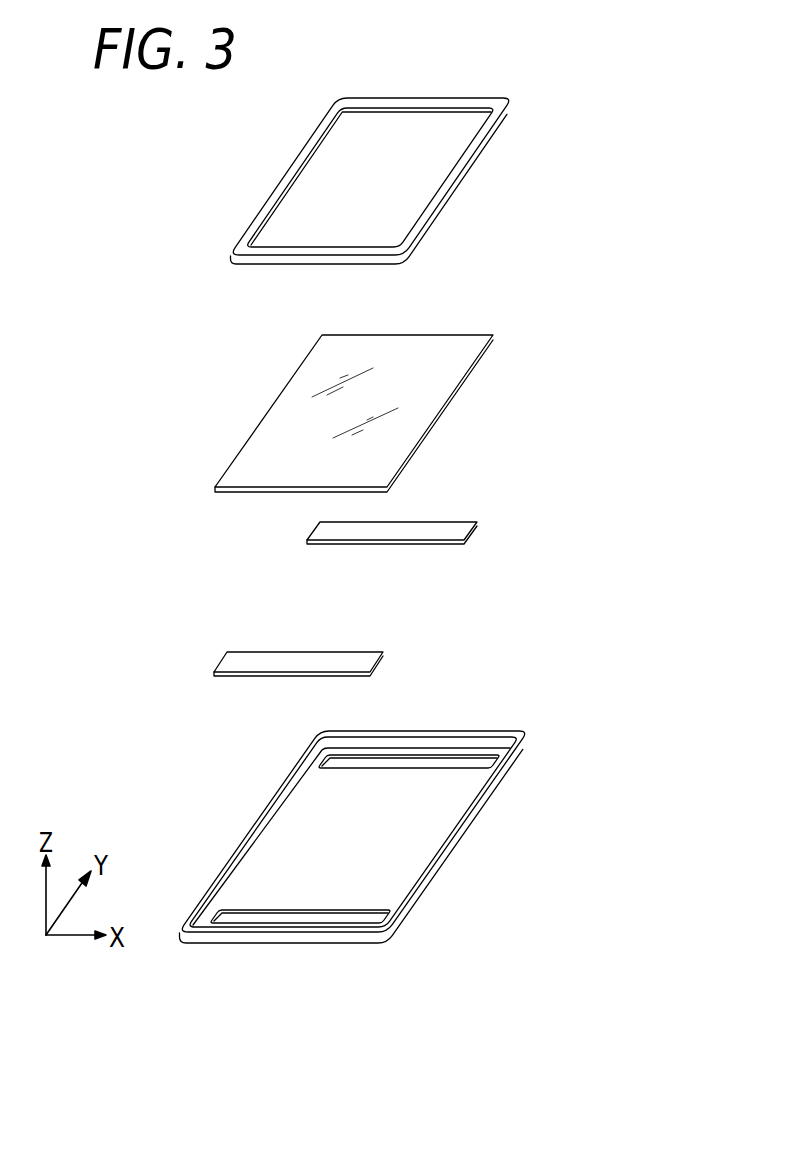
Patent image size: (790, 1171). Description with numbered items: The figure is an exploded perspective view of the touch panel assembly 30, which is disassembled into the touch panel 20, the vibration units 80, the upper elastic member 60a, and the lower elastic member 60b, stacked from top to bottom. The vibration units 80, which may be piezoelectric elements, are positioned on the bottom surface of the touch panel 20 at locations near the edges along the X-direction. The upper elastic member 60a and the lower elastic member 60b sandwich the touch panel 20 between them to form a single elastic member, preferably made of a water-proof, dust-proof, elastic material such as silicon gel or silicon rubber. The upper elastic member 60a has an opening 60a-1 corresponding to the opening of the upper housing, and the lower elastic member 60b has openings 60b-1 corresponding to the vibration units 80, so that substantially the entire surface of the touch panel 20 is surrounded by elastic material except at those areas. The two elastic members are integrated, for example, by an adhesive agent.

The touch panel assembly 30 is at (628, 960).
The upper elastic member 60a is at (422, 181).
The opening 60a-1 is at (395, 188).
The touch panel 20 is at (420, 395).
The vibration unit 80 is at (455, 538).
The lower elastic member 60b is at (398, 804).
The opening 60b-1 is at (472, 765).